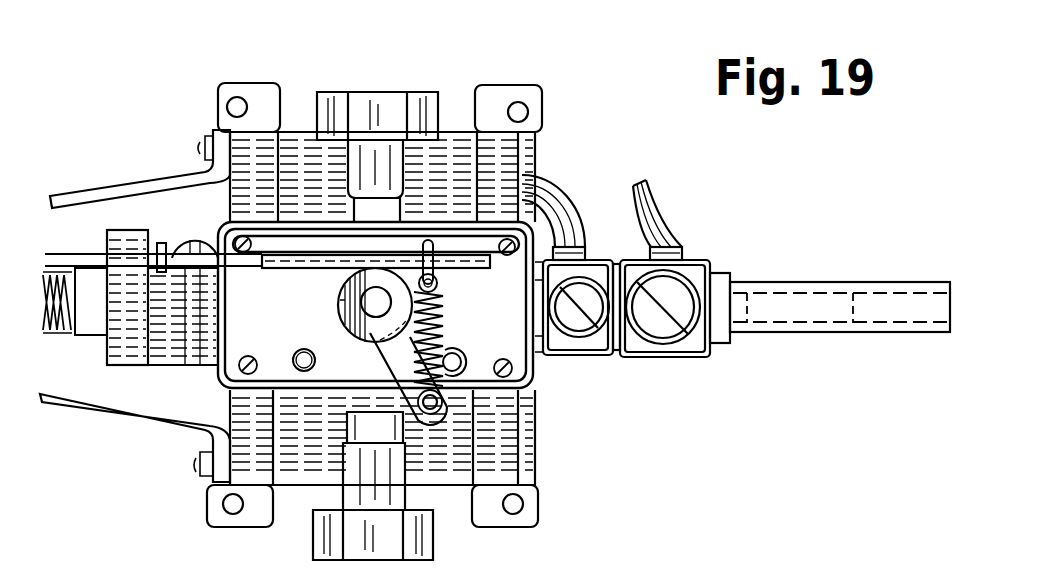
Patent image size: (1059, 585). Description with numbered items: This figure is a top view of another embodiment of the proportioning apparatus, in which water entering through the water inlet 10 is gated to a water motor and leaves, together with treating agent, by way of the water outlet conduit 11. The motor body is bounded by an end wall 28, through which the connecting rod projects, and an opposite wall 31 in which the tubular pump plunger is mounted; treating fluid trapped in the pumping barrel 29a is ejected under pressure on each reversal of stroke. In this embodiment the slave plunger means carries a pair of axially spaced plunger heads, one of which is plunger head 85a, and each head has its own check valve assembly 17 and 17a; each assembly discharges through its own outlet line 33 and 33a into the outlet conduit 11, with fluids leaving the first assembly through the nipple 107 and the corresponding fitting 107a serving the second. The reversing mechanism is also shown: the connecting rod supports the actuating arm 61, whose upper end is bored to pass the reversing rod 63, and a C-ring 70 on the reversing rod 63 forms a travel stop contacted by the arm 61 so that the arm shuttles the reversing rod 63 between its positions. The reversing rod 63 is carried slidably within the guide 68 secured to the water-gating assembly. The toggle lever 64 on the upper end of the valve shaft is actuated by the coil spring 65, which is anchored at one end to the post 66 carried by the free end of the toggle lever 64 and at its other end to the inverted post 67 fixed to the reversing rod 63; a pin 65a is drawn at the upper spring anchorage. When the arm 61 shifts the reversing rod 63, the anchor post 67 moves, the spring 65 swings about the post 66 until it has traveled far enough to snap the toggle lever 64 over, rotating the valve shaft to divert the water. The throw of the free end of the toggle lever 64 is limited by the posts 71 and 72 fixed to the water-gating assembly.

The water inlet 10 is at (343, 493).
The water outlet conduit 11 is at (352, 176).
The treating agent valve chamber means 17 is at (568, 362).
The check valve assembly 17a is at (716, 418).
The end wall 28 is at (228, 408).
The pumping barrel 29a is at (854, 258).
The opposite wall 31 is at (510, 428).
The channel 33 is at (565, 206).
The outlet line 33a is at (729, 193).
The actuating arm 61 is at (105, 356).
The reversing rod 63 is at (93, 252).
The toggle lever 64 is at (395, 362).
The coil spring 65 is at (440, 340).
The pin 65a is at (506, 301).
The post 66 is at (432, 412).
The inverted post 67 is at (437, 243).
The guide 68 is at (318, 276).
The C-ring 70 is at (160, 243).
The post 71 is at (299, 356).
The post 72 is at (458, 360).
The plunger head 85a is at (776, 336).
The nipple 107 is at (583, 248).
The fitting 107a is at (777, 226).